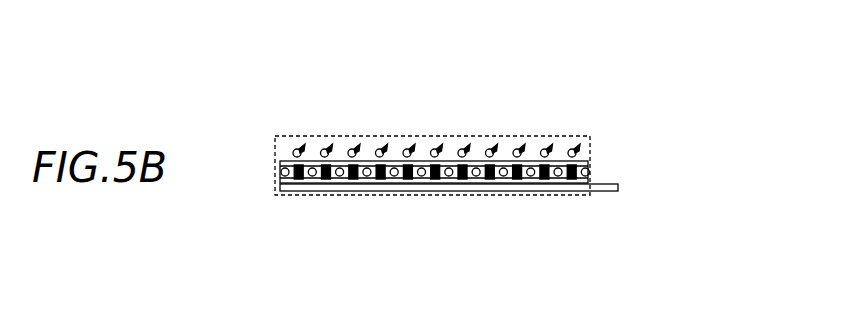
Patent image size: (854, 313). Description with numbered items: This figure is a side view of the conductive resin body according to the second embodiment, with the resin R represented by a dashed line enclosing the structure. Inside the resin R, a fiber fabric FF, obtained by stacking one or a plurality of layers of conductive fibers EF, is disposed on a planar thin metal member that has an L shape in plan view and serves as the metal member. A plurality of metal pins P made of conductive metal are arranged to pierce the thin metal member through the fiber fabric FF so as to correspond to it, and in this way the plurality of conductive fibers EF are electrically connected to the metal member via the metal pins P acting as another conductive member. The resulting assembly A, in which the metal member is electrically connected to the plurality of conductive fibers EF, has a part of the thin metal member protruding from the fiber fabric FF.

The resin R is at (277, 137).
The metal pins P is at (577, 148).
The fiber fabric FF is at (412, 159).
The conductive fibers EF is at (555, 176).
The assembly A is at (585, 196).